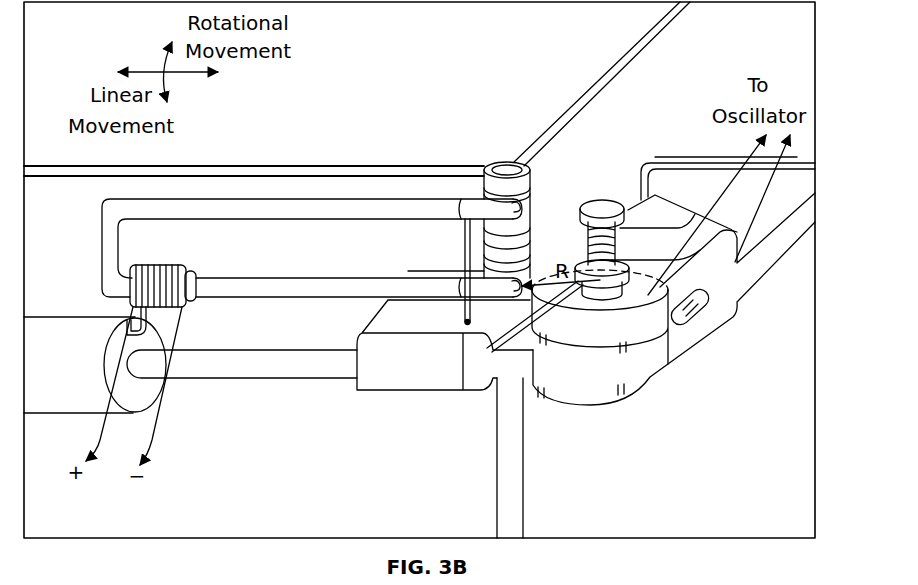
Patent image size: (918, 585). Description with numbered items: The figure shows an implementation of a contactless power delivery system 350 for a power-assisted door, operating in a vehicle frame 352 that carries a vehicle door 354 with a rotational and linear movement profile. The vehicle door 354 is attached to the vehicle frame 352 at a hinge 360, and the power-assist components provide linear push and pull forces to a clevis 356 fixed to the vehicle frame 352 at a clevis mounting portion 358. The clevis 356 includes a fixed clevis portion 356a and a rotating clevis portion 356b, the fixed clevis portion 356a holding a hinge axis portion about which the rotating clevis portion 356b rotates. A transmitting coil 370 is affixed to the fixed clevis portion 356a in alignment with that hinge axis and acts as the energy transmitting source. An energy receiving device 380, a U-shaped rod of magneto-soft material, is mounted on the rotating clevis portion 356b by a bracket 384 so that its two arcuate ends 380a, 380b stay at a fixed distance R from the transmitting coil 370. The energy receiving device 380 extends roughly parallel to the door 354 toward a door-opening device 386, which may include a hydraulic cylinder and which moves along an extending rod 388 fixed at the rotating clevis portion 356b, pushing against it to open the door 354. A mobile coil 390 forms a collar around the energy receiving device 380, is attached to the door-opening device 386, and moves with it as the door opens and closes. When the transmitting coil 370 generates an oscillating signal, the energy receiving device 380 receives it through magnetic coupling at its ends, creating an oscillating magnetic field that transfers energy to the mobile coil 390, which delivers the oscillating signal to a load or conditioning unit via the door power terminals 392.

The contactless power delivery system 350 is at (510, 76).
The vehicle frame 352 is at (640, 86).
The vehicle door 354 is at (51, 209).
The clevis 356 is at (626, 411).
The fixed clevis portion 356a is at (713, 265).
The rotating clevis portion 356b is at (507, 340).
The clevis mounting portion 358 is at (744, 218).
The hinge 360 is at (498, 163).
The transmitting coil 370 is at (603, 196).
The energy receiving device 380 is at (352, 199).
The first end of the energy receiving device 380a is at (521, 208).
The second end of the energy receiving device 380b is at (524, 282).
The bracket 384 is at (463, 390).
The door-opening device 386 is at (79, 315).
The extending rod 388 is at (288, 379).
The mobile coil 390 is at (173, 265).
The door power terminals 392 is at (106, 476).